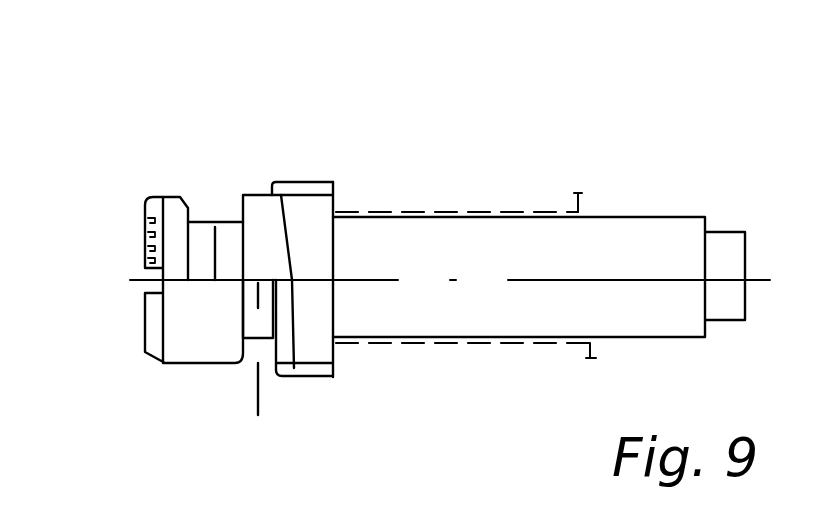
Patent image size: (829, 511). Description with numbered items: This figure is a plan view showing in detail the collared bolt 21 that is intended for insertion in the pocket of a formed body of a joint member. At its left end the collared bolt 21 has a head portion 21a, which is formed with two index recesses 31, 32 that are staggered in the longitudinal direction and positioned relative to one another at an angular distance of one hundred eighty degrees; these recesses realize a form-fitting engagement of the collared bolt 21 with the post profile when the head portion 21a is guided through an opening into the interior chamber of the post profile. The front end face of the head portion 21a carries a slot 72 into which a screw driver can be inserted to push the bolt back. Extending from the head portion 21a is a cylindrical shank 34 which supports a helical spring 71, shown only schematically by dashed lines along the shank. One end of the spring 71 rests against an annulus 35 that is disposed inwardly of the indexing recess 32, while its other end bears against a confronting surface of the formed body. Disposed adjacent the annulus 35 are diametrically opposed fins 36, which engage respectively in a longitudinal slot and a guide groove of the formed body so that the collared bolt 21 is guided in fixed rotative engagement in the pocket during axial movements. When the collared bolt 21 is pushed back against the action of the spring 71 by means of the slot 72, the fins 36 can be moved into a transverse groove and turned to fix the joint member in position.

The collared bolt 21 is at (503, 182).
The head portion 21a is at (149, 366).
The index recess 31 is at (214, 193).
The index recess 32 is at (255, 347).
The cylindrical shank 34 is at (627, 238).
The annulus 35 is at (334, 212).
The fins 36 is at (302, 180).
The helical spring 71 is at (453, 344).
The slot 72 is at (144, 276).